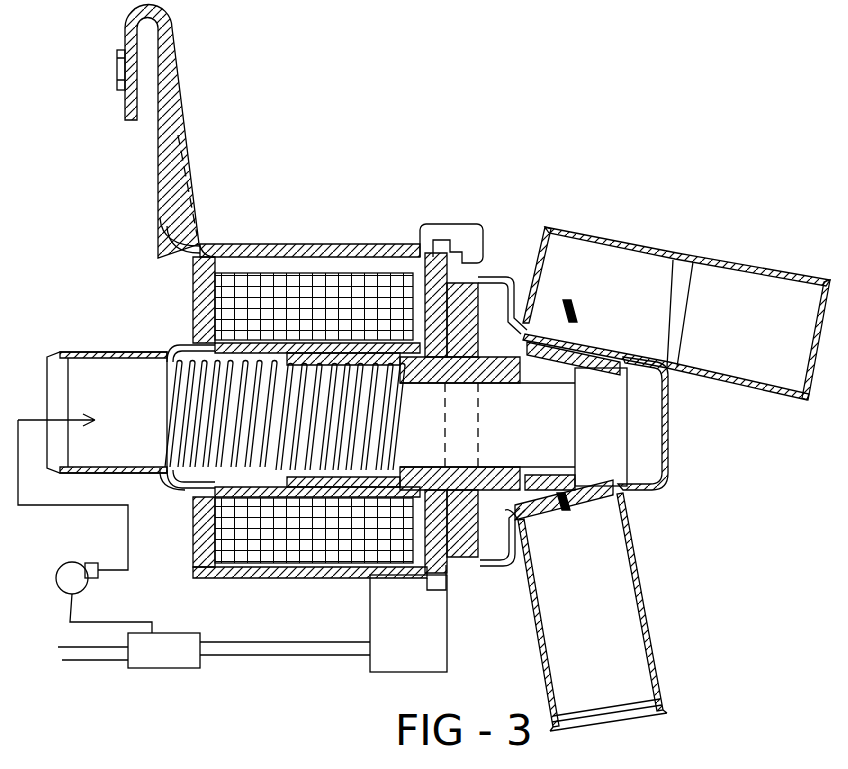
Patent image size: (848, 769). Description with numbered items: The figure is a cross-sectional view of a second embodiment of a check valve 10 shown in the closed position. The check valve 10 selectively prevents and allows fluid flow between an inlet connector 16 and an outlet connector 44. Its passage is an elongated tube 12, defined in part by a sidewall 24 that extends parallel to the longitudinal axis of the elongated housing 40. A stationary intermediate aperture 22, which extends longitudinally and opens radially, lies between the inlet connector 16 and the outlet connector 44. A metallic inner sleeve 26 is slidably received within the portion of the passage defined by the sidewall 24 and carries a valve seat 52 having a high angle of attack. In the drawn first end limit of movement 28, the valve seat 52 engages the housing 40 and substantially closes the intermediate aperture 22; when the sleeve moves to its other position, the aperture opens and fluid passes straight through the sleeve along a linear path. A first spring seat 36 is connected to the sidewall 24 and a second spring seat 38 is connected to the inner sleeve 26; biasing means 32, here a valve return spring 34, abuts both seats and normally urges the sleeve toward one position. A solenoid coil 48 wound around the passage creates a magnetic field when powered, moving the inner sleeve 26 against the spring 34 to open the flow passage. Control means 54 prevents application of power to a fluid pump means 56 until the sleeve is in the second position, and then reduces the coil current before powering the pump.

The check valve 10 is at (413, 143).
The elongated tube 12 is at (275, 340).
The inlet connector 16 is at (107, 350).
The intermediate aperture 22 is at (600, 355).
The sidewall 24 is at (250, 342).
The inner sleeve 26 is at (330, 358).
The first end limit of movement 28 is at (633, 455).
The biasing means 32 is at (245, 480).
The valve return spring 34 is at (215, 362).
The first spring seat 36 is at (180, 483).
The second spring seat 38 is at (405, 455).
The elongated housing 40 is at (333, 248).
The outlet connector 44 is at (743, 257).
The solenoid coil 48 is at (242, 550).
The valve seat 52 is at (555, 345).
The control means 54 is at (173, 672).
The fluid pump means 56 is at (73, 563).